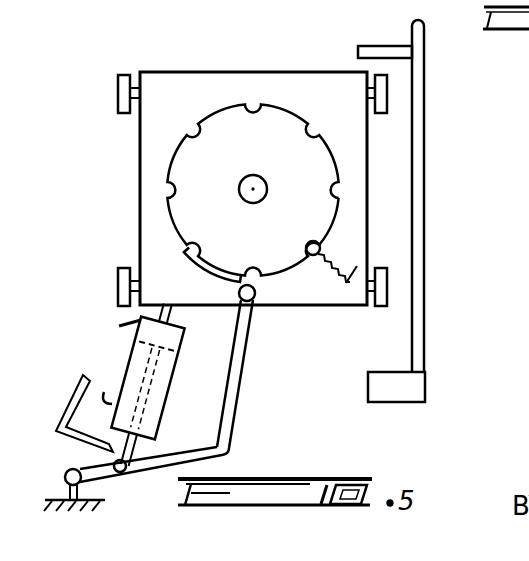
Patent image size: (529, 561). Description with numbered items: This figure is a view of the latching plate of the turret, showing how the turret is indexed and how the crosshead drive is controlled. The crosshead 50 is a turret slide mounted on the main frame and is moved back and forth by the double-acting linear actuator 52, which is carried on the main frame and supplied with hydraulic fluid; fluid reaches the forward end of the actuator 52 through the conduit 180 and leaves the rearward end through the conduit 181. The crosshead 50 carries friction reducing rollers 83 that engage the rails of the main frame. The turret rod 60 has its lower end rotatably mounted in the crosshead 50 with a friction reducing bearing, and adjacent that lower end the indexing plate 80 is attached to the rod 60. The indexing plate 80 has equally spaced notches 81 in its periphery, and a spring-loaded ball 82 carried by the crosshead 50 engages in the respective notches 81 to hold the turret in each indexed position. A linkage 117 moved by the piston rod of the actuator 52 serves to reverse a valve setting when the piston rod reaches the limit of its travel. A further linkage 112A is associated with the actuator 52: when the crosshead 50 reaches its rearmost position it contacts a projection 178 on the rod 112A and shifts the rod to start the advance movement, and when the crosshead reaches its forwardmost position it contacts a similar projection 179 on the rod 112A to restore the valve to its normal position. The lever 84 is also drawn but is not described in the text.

The crosshead 50 is at (311, 85).
The double-acting linear actuator 52 is at (160, 385).
The rod 60 is at (266, 185).
The indexing plate 80 is at (223, 113).
The notches 81 is at (250, 262).
The spring-loaded ball 82 is at (312, 241).
The rollers 83 is at (127, 114).
The lever 84 is at (152, 448).
The linkage 112A is at (425, 302).
The linkage 117 is at (84, 378).
The projection 178 is at (368, 385).
The projection 179 is at (386, 46).
The conduit 180 is at (118, 322).
The conduit 181 is at (112, 400).